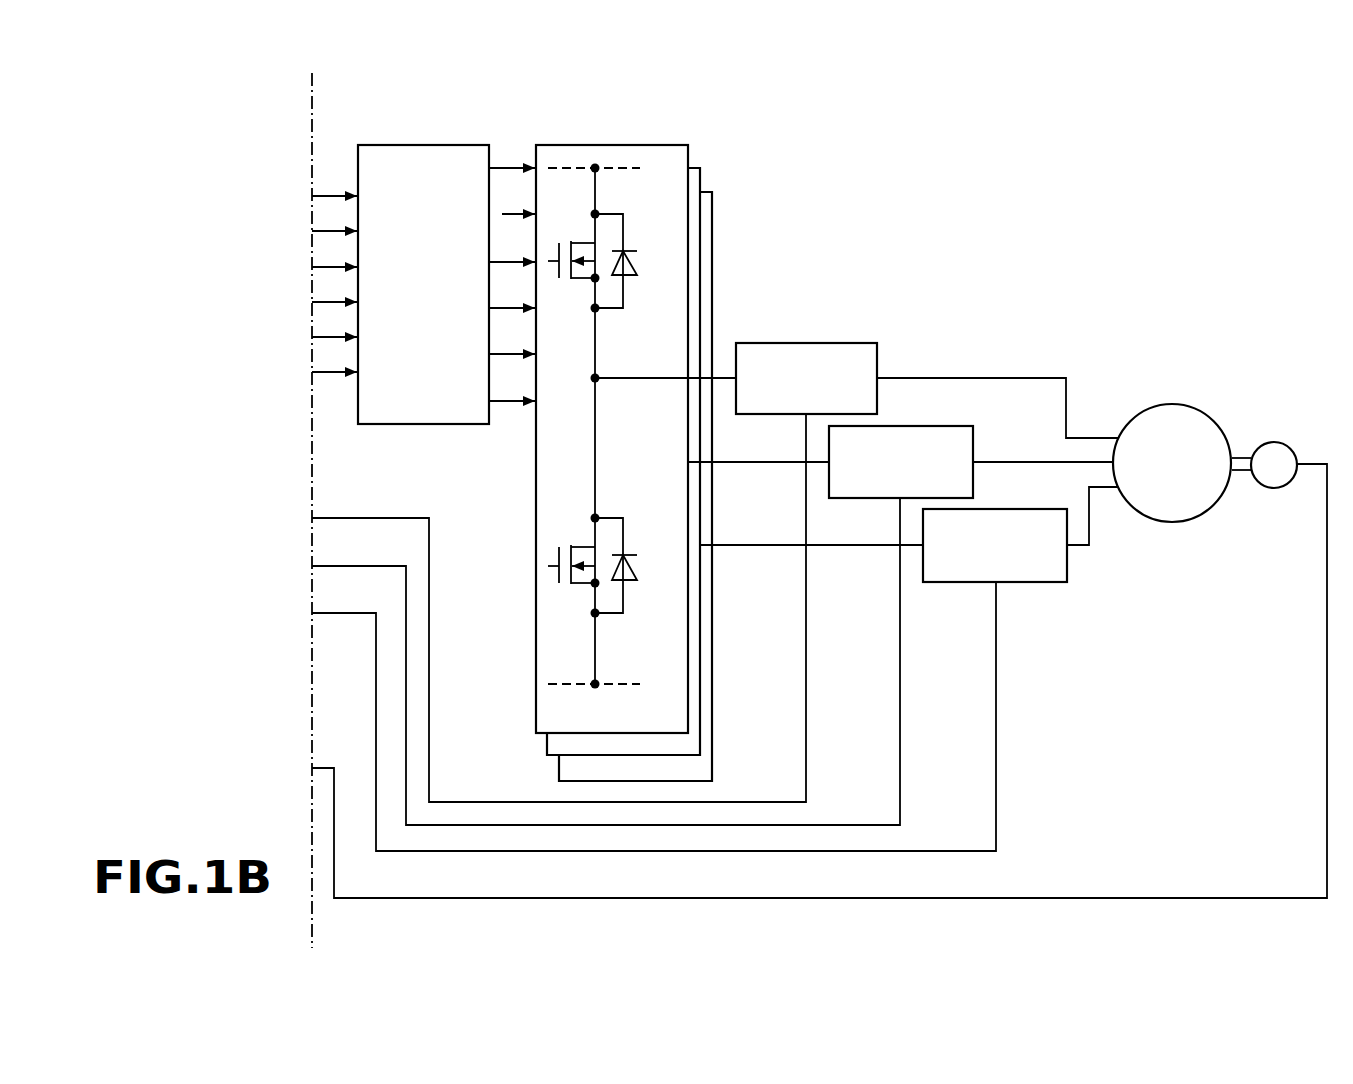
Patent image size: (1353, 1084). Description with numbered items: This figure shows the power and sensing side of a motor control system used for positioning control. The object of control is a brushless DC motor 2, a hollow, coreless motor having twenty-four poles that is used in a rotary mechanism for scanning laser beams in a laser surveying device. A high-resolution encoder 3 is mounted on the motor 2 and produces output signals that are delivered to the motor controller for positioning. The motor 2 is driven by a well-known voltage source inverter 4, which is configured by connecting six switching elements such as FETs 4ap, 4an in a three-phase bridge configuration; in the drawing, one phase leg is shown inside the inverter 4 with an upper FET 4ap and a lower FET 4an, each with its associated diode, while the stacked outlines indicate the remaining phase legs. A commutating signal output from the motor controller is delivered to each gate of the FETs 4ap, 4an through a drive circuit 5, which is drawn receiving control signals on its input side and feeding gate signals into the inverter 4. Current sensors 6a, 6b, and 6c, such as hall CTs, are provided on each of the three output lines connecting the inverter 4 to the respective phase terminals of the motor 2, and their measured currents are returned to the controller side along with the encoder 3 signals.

The brushless DC motor 2 is at (1182, 404).
The encoder 3 is at (1277, 442).
The voltage source inverter 4 is at (624, 429).
The FET 4ap is at (565, 241).
The FET 4an is at (568, 543).
The drive circuit 5 is at (437, 425).
The current sensor 6a is at (765, 342).
The current sensor 6b is at (975, 440).
The current sensor 6c is at (957, 583).